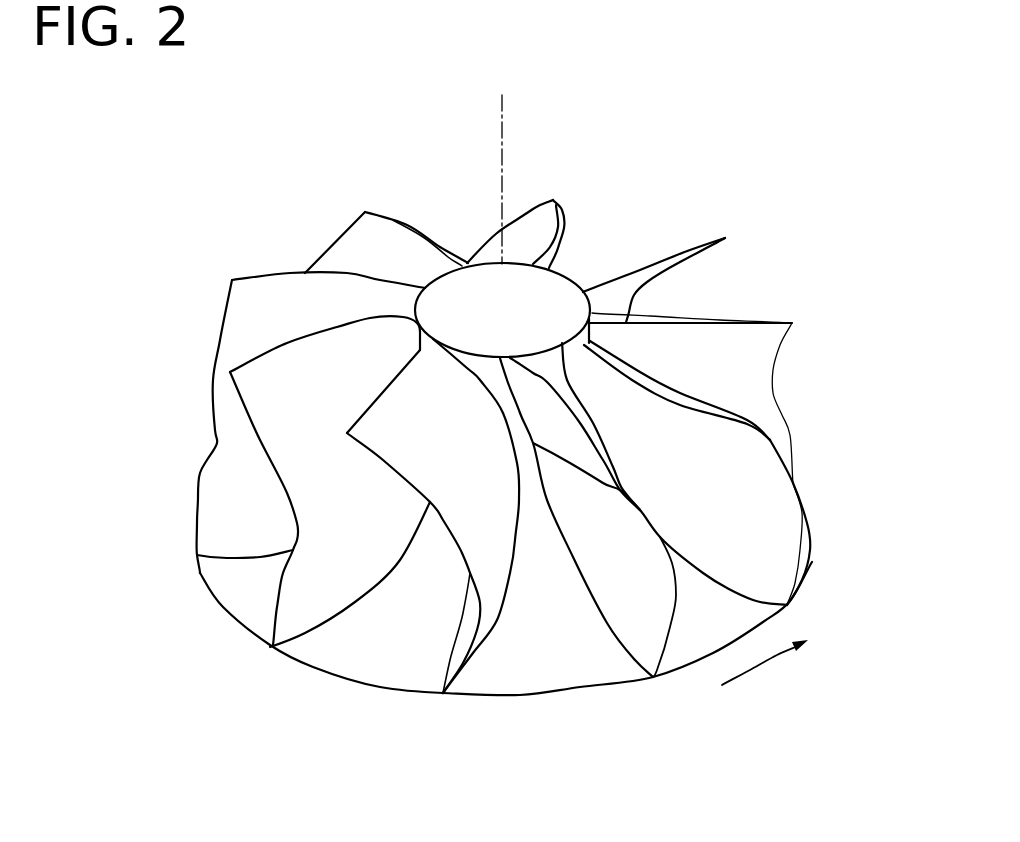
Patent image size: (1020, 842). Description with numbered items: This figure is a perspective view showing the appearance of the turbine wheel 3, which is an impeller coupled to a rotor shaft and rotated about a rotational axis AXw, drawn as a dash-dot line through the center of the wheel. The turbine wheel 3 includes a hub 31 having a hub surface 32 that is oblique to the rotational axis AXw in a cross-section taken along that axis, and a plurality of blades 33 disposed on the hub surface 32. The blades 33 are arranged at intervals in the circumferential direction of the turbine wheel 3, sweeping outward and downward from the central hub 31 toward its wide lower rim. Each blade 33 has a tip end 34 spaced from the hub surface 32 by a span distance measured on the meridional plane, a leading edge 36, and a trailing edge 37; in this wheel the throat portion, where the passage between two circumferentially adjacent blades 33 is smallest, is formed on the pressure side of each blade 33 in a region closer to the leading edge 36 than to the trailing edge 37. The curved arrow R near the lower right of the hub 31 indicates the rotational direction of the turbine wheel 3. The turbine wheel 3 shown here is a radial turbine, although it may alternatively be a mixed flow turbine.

The turbine wheel 3 is at (673, 123).
The hub 31 is at (773, 623).
The hub surface 32 is at (700, 620).
The blade 33 is at (640, 287).
The tip end 34 is at (267, 462).
The leading edge 36 is at (277, 593).
The trailing edge 37 is at (263, 350).
The rotational axis AXw is at (502, 133).
The rotational direction R is at (772, 663).